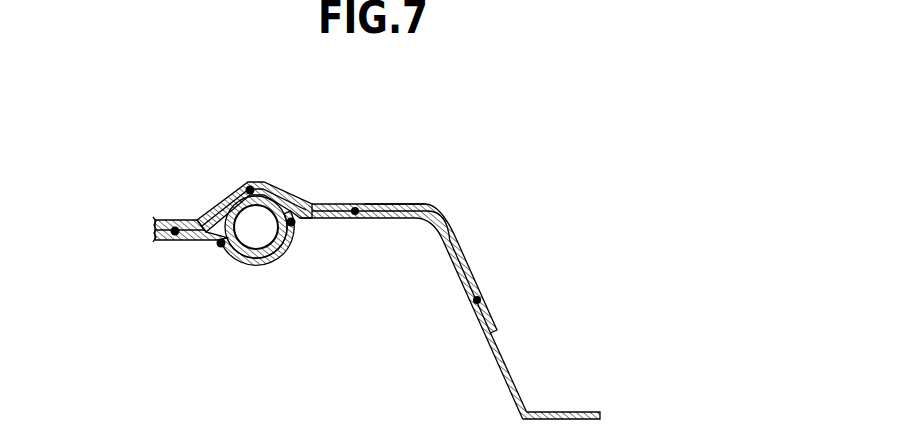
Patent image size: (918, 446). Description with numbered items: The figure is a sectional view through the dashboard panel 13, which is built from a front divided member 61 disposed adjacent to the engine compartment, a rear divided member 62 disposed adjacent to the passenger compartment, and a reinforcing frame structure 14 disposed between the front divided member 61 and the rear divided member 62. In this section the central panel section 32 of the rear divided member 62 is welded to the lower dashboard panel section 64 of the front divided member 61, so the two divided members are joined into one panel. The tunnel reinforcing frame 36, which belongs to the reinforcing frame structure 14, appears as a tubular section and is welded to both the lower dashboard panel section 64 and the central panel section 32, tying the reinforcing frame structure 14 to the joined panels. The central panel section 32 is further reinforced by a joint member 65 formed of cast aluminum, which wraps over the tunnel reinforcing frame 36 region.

The dashboard panel 13 is at (151, 80).
The reinforcing frame structure 14 is at (226, 256).
The central panel section 32 is at (432, 191).
The tunnel reinforcing frame 36 is at (239, 258).
The front divided member 61 is at (554, 359).
The rear divided member 62 is at (414, 166).
The lower dashboard panel section 64 is at (562, 401).
The joint member 65 is at (256, 182).